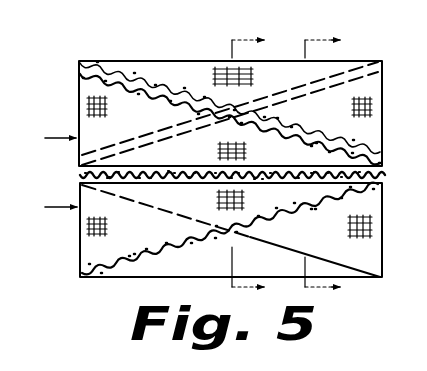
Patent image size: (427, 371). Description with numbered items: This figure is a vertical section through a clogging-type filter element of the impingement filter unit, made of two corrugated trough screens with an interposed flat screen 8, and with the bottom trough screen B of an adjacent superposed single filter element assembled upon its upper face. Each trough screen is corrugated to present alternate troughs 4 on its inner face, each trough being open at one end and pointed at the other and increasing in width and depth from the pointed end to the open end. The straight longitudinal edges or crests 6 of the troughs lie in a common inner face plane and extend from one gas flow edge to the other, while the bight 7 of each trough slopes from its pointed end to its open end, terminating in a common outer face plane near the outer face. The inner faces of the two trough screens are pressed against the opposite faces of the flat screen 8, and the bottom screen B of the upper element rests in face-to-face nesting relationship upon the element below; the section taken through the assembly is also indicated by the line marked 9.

The alternate troughs 4 is at (231, 169).
The longitudinal edges or crests 6 is at (156, 170).
The bight 7 is at (160, 58).
The flat screen 8 is at (386, 175).
The section line 9 is at (331, 165).
The bottom trough screen B is at (313, 129).